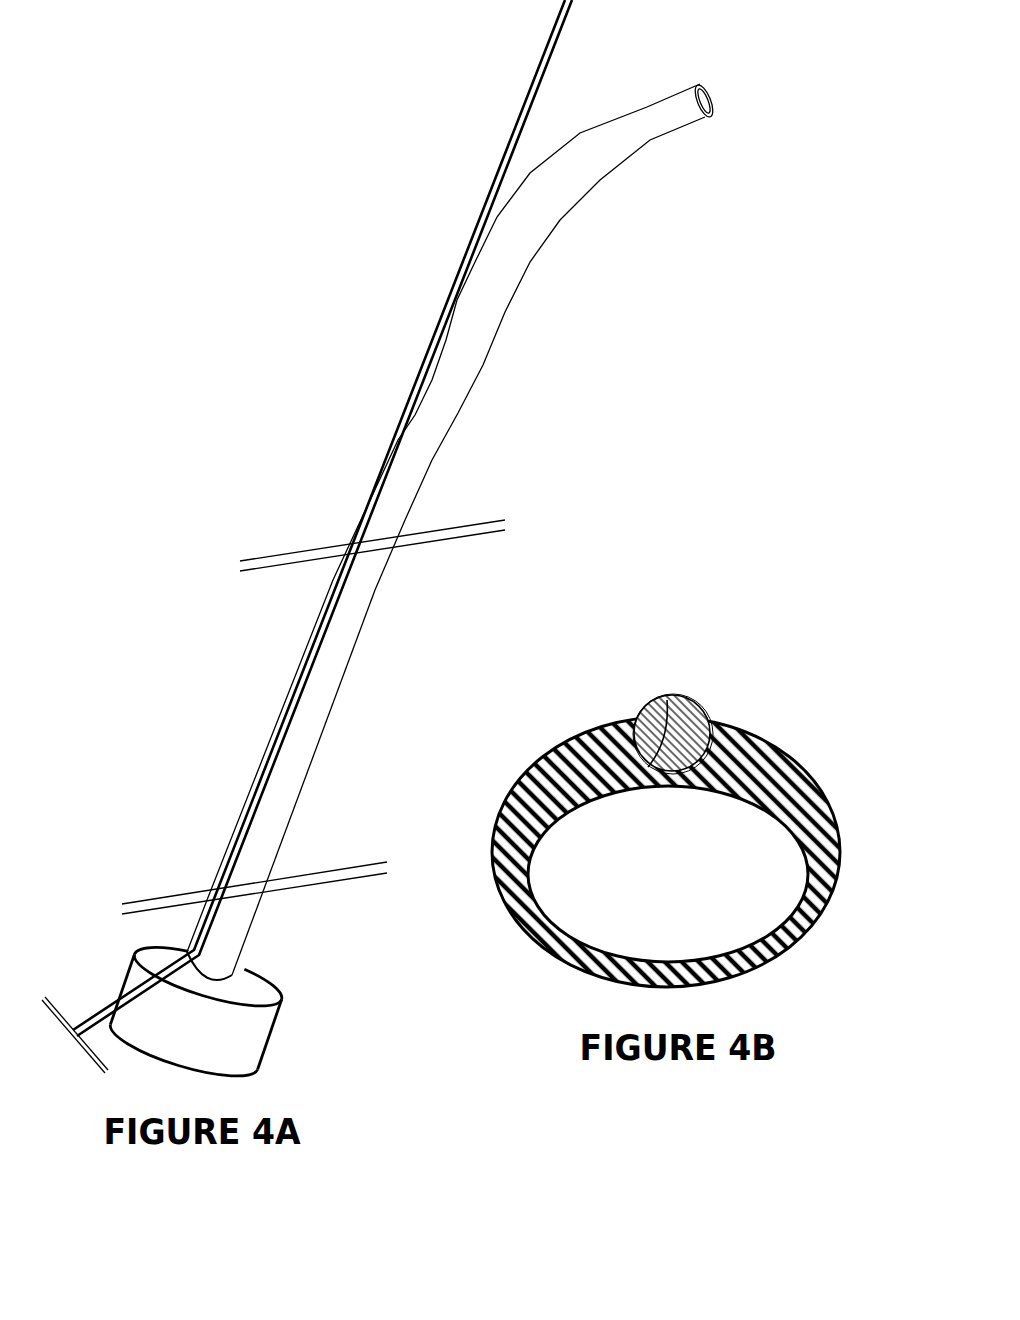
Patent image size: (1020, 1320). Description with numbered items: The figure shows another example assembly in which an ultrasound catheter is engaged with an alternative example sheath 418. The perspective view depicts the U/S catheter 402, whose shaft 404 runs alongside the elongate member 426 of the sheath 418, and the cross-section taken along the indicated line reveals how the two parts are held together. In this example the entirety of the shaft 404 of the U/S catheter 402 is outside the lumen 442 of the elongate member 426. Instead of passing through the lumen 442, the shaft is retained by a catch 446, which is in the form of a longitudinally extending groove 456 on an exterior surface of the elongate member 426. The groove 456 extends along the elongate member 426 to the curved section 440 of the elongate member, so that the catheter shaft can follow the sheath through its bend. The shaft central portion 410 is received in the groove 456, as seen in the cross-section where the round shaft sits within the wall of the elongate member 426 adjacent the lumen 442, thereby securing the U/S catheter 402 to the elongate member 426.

In FIG. 4A, the U/S catheter 402 is at (394, 518).
In FIG. 4A, the shaft 404 is at (515, 118).
In FIG. 4B, the shaft 404 is at (617, 676).
In FIG. 4A, the shaft central portion 410 is at (317, 645).
In FIG. 4B, the shaft central portion 410 is at (657, 678).
In FIG. 4A, the sheath 418 is at (357, 655).
In FIG. 4B, the sheath 418 is at (827, 908).
In FIG. 4A, the elongate member 426 is at (368, 640).
In FIG. 4B, the elongate member 426 is at (682, 850).
In FIG. 4A, the curved section 440 is at (558, 233).
In FIG. 4B, the lumen 442 is at (668, 874).
In FIG. 4B, the catch 446 is at (596, 693).
In FIG. 4B, the groove 456 is at (667, 700).